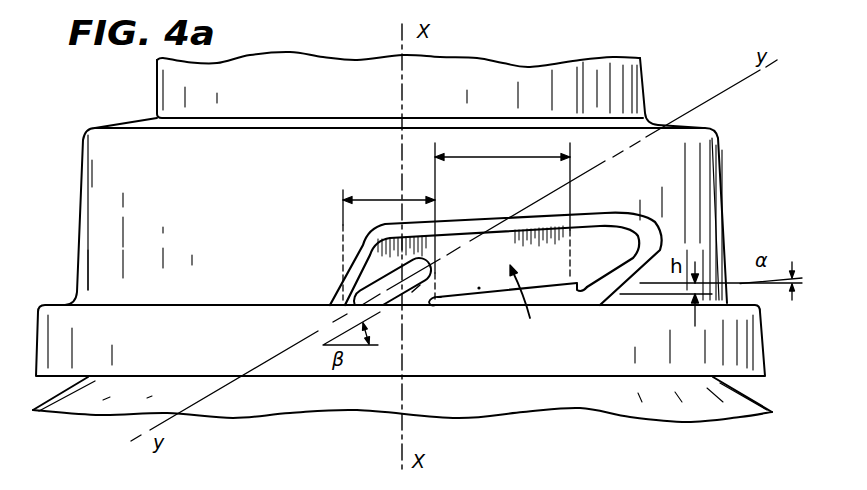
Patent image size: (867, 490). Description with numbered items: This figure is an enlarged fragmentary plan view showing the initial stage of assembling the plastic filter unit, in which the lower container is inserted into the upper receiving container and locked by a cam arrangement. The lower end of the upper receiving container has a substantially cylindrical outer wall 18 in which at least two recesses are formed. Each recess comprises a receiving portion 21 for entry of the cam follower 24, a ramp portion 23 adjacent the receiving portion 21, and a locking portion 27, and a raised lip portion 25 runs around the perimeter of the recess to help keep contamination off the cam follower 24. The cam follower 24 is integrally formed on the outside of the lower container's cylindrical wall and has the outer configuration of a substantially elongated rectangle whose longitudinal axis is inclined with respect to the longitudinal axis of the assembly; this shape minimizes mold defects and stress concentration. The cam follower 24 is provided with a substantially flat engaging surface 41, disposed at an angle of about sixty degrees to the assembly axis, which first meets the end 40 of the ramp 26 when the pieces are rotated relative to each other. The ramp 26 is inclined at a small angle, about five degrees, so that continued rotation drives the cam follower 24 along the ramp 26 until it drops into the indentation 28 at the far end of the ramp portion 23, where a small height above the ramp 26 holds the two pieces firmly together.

The cylindrical outer wall 18 is at (103, 143).
The receiving portion 21 is at (372, 200).
The ramp portion 23 is at (512, 158).
The cam follower 24 is at (374, 290).
The raised lip portion 25 is at (627, 215).
The ramp 26 is at (480, 290).
The locking portion 27 is at (555, 342).
The indentation 28 is at (615, 268).
The end of ramp 40 is at (432, 305).
The engaging surface 41 is at (417, 292).